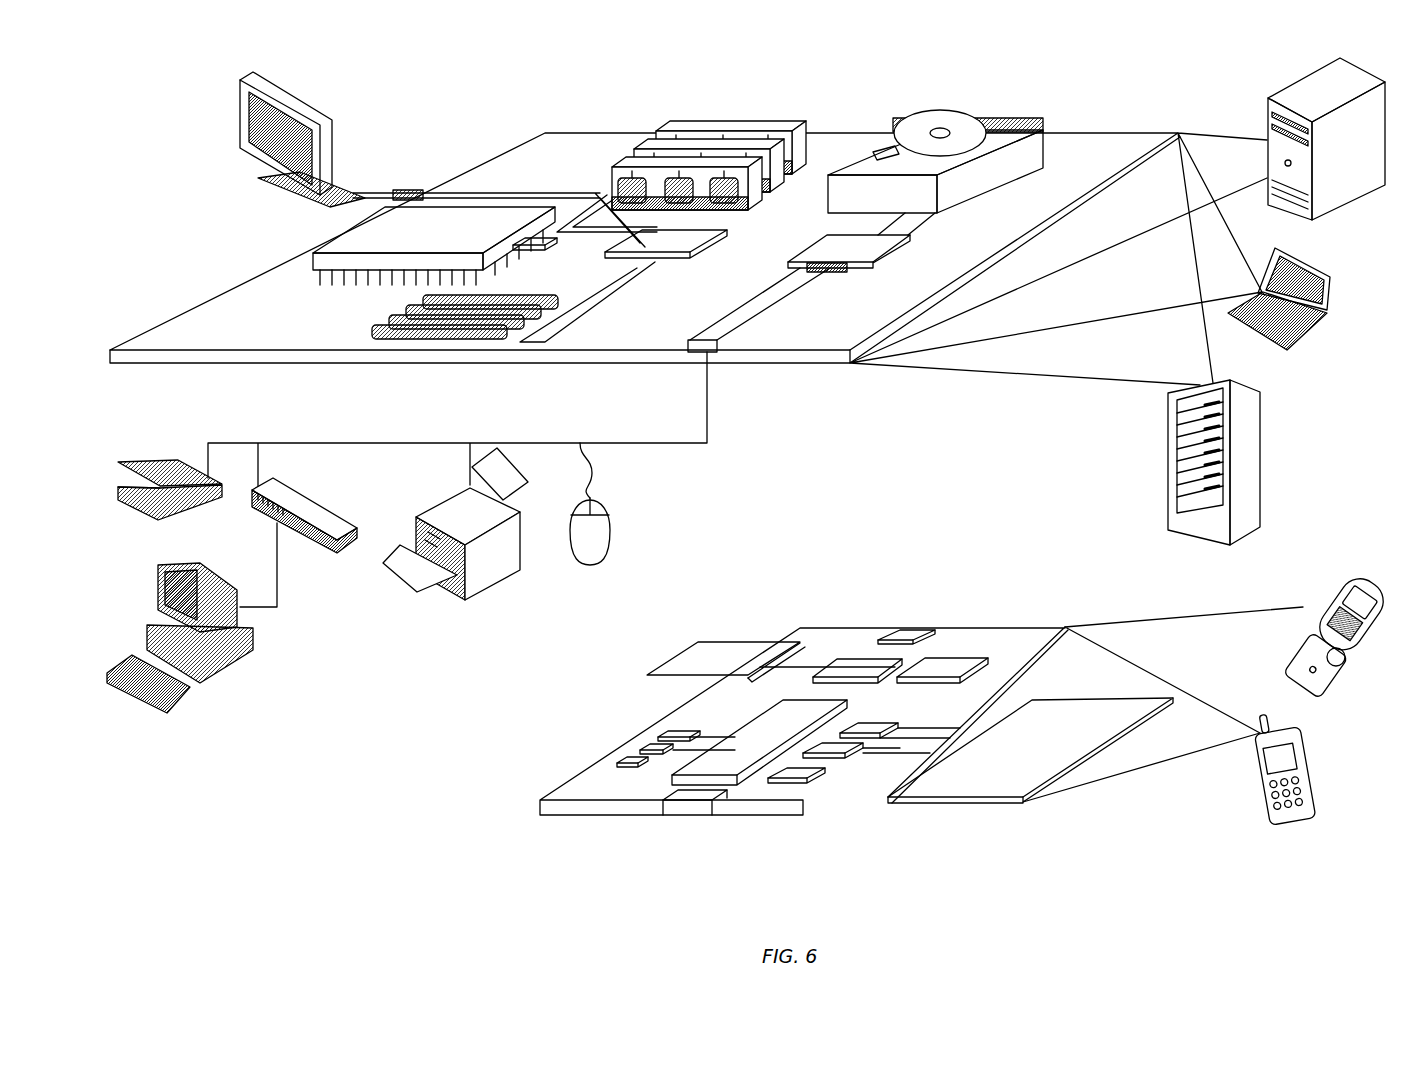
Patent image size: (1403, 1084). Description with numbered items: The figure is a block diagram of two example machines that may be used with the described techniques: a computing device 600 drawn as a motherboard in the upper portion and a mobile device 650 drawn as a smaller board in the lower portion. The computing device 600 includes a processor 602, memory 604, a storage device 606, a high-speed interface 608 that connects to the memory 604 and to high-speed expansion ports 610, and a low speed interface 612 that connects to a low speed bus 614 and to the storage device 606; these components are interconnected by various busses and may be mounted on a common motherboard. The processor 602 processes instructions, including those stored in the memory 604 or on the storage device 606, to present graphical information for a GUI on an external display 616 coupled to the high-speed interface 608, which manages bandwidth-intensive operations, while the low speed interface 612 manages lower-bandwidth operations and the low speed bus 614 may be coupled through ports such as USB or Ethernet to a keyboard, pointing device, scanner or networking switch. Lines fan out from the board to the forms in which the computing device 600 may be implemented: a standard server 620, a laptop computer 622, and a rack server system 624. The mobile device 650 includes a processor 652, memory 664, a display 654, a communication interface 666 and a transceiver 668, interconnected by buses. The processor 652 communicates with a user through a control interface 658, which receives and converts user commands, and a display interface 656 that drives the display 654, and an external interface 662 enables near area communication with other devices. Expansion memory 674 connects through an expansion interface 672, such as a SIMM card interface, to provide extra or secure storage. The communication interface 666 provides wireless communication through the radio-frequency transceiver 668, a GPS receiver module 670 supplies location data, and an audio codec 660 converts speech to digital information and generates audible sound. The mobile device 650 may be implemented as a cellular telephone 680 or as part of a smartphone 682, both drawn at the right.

The computing device 600 is at (453, 102).
The processor 602 is at (313, 260).
The memory 604 is at (680, 124).
The storage device 606 is at (918, 118).
The high-speed interface 608 is at (640, 243).
The high-speed expansion ports 610 is at (390, 318).
The low speed interface 612 is at (828, 245).
The low speed bus 614 is at (717, 353).
The display 616 is at (240, 80).
The standard server 620 is at (1268, 118).
The laptop computer 622 is at (1337, 272).
The rack server system 624 is at (1168, 487).
The mobile device 650 is at (513, 812).
The processor 652 is at (730, 767).
The display 654 is at (985, 785).
The display interface 656 is at (803, 790).
The control interface 658 is at (822, 748).
The audio codec 660 is at (868, 727).
The external interface 662 is at (692, 803).
The memory 664 is at (640, 755).
The communication interface 666 is at (862, 667).
The transceiver 668 is at (943, 667).
The GPS receiver module 670 is at (912, 628).
The expansion interface 672 is at (783, 642).
The expansion memory 674 is at (707, 642).
The cellular telephone 680 is at (1297, 548).
The smartphone 682 is at (1253, 770).